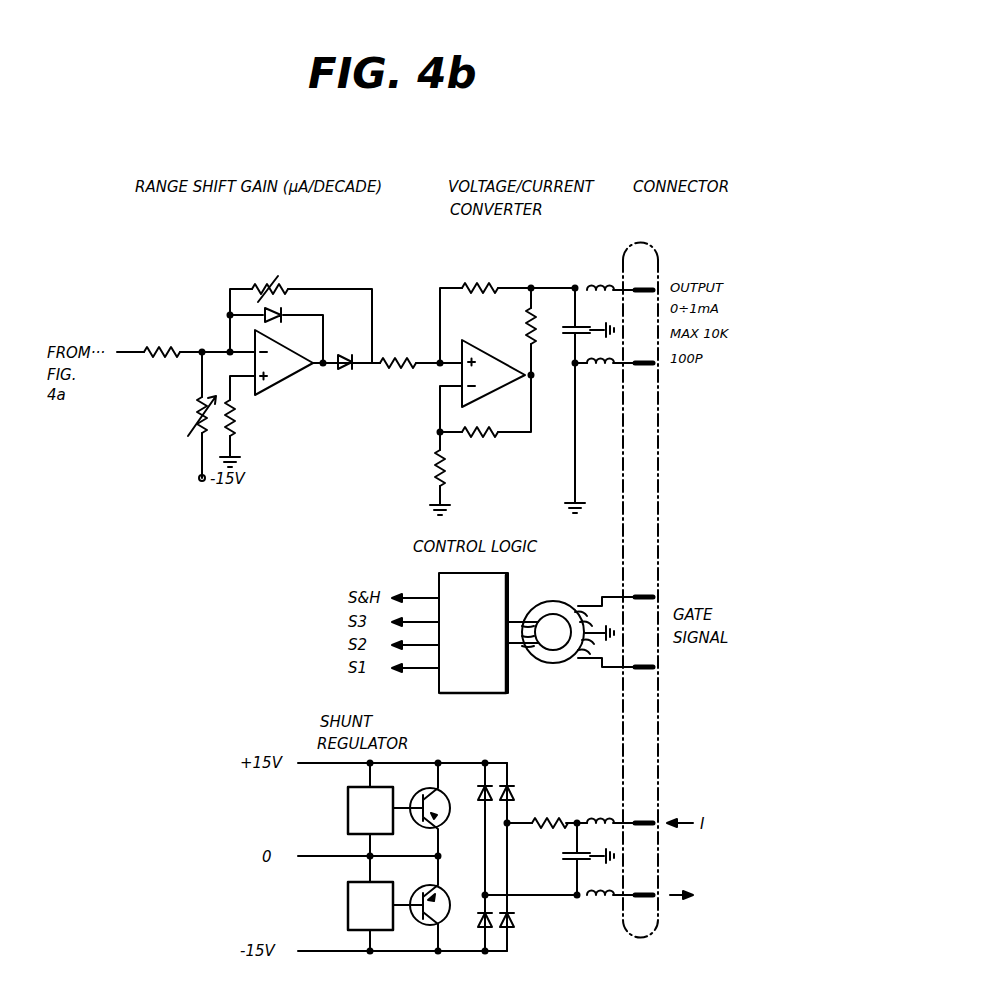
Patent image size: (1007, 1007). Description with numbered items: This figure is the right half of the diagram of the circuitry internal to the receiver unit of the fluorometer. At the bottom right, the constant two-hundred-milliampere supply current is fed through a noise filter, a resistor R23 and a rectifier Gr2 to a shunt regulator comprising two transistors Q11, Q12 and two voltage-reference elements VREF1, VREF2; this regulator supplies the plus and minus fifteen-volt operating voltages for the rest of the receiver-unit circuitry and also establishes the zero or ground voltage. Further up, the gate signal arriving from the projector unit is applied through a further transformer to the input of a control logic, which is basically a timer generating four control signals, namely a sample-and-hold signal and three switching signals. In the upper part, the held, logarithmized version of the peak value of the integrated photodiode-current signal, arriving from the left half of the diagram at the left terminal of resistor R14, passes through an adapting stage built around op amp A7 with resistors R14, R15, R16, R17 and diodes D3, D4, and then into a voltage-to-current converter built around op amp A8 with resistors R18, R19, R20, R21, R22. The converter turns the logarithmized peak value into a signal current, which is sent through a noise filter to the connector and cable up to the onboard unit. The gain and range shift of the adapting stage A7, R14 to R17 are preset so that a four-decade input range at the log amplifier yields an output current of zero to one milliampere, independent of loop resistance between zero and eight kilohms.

The resistor R14 is at (181, 347).
The resistor R15 is at (188, 426).
The resistor R16 is at (239, 419).
The resistor R17 is at (257, 285).
The resistor R18 is at (394, 368).
The resistor R19 is at (482, 270).
The resistor R20 is at (446, 470).
The resistor R21 is at (486, 436).
The resistor R22 is at (528, 317).
The resistor R23 is at (534, 816).
The diode D3 is at (272, 319).
The diode D4 is at (344, 370).
The adapting stage op amp A7 is at (281, 381).
The voltage-to-current converter op amp A8 is at (482, 395).
The transistor Q11 is at (448, 818).
The transistor Q12 is at (448, 913).
The rectifier Gr2 is at (494, 840).
The voltage-reference element VREF1 is at (370, 810).
The voltage-reference element VREF2 is at (370, 906).